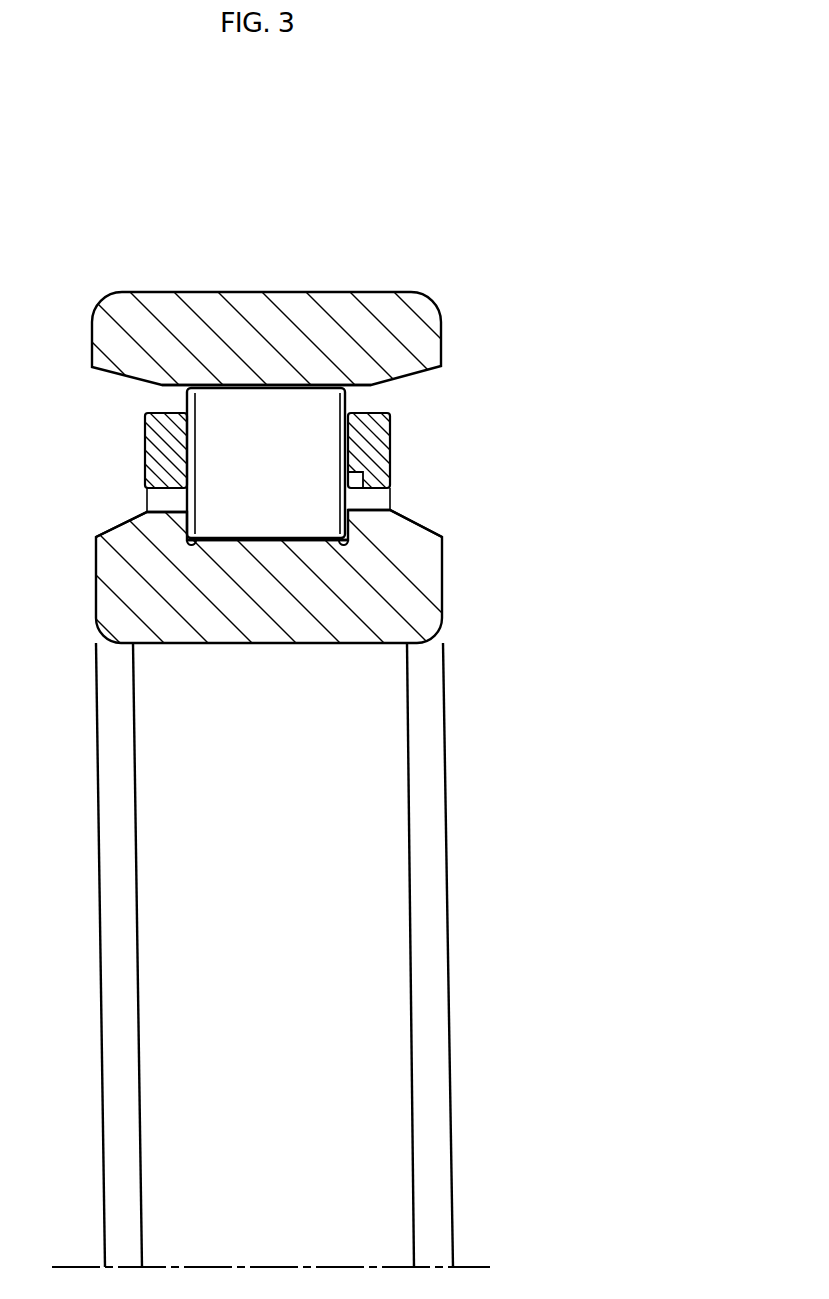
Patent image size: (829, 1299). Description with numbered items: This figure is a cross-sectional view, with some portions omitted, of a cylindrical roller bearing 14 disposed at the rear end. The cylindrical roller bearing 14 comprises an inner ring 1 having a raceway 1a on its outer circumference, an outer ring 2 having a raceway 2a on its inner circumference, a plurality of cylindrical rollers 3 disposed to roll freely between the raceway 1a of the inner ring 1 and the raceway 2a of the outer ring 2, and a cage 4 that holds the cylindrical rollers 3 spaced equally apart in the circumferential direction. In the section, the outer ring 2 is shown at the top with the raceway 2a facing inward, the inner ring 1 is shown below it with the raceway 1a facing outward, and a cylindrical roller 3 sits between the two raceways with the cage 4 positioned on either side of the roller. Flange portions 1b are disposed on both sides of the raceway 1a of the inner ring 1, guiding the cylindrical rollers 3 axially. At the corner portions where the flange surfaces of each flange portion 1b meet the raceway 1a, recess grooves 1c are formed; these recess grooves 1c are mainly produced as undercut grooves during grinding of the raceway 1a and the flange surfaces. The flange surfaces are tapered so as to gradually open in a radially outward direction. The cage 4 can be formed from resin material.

The inner ring 1 is at (432, 570).
The raceway 1a is at (280, 528).
The flange portions 1b is at (177, 519).
The recess grooves 1c is at (187, 548).
The outer ring 2 is at (427, 345).
The raceway 2a is at (272, 404).
The cylindrical rollers 3 is at (227, 448).
The cage 4 is at (387, 443).
The cylindrical roller bearing 14 is at (316, 724).